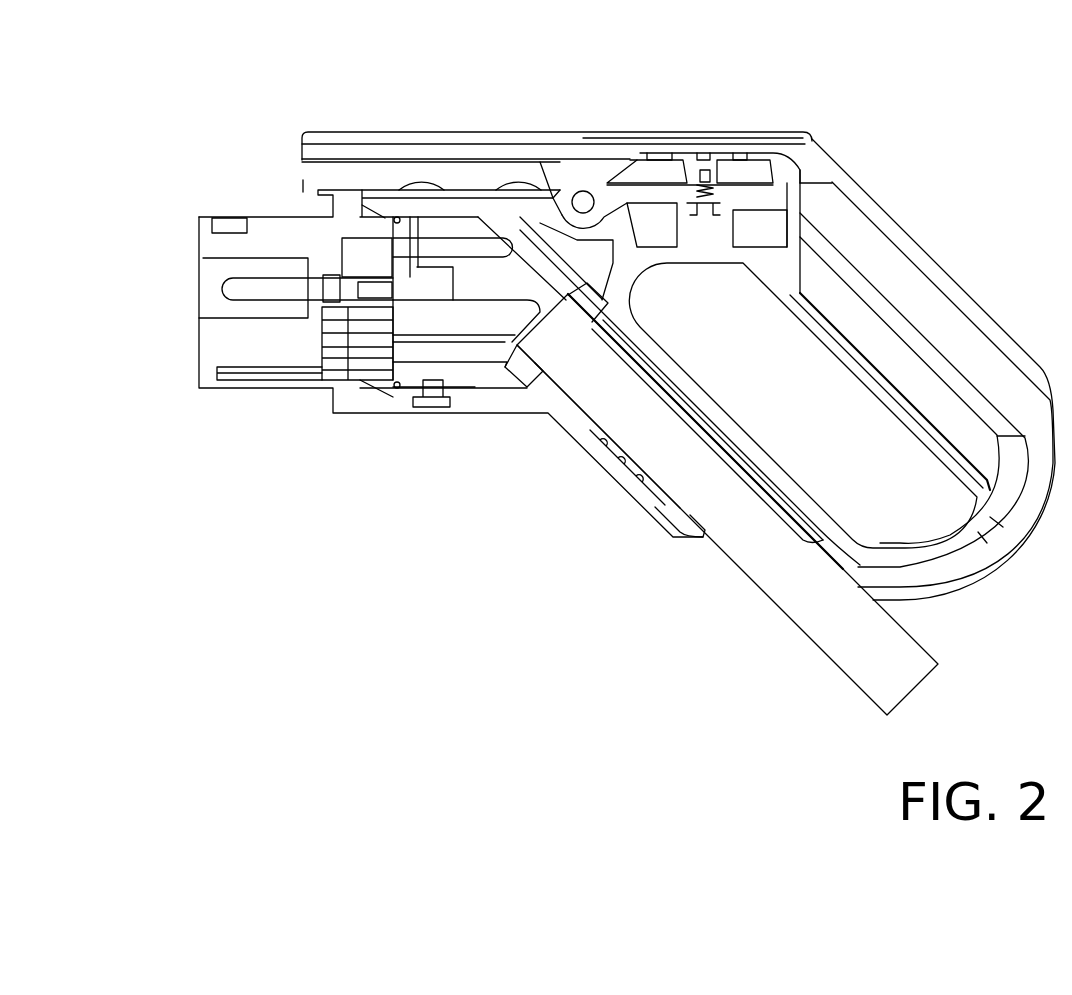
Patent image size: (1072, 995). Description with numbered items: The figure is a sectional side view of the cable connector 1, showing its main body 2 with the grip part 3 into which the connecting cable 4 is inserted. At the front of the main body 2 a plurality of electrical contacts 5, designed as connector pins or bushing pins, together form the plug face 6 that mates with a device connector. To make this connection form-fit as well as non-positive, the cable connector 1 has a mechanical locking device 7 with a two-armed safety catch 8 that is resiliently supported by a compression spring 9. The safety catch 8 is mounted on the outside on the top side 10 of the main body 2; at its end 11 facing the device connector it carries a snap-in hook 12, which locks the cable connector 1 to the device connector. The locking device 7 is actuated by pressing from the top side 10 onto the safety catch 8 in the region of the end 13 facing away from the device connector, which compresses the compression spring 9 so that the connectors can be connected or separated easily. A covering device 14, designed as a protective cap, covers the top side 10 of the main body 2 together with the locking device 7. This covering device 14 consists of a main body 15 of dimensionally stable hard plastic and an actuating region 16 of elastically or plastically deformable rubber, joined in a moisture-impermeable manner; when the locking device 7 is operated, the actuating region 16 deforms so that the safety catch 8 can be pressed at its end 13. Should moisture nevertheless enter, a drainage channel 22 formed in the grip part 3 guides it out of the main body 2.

The cable connector 1 is at (930, 150).
The main body 2 is at (543, 500).
The grip part 3 is at (868, 267).
The connecting cable 4 is at (890, 654).
The electrical contacts 5 is at (232, 287).
The plug face 6 is at (187, 298).
The mechanical locking device 7 is at (502, 158).
The safety catch 8 is at (408, 173).
The compression spring 9 is at (710, 183).
The top side 10 is at (561, 110).
The end facing the device connector 11 is at (283, 117).
The snap-in hook 12 is at (307, 180).
The end facing away from the device connector 13 is at (783, 130).
The covering device 14 is at (597, 130).
The main body of the covering device 15 is at (345, 140).
The actuating region 16 is at (682, 140).
The drainage channel 22 is at (797, 267).